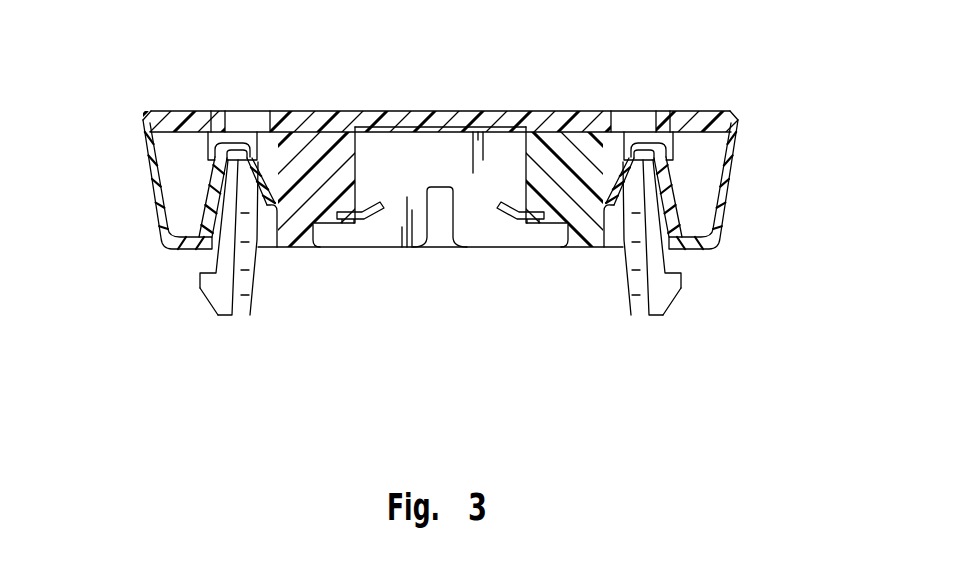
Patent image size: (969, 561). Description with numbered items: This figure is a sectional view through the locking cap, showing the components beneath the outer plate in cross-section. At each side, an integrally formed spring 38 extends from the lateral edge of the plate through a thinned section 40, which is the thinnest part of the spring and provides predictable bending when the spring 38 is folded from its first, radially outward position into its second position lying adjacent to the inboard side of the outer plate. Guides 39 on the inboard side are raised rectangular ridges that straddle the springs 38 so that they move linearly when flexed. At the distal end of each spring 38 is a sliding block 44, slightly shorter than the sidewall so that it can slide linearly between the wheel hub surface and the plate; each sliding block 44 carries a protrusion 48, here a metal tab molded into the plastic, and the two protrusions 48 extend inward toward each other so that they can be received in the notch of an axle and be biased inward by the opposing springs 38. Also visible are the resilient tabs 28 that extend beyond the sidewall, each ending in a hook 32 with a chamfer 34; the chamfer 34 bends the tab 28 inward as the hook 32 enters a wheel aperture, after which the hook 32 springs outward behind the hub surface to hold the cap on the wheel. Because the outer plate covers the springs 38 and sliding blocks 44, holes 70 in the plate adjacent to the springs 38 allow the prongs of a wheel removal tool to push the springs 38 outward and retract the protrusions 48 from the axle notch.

The tab 28 is at (633, 284).
The hook 32 is at (681, 278).
The chamfer 34 is at (673, 303).
The spring 38 is at (742, 181).
The guide 39 is at (670, 111).
The thinned section 40 is at (736, 118).
The sliding block 44 is at (581, 248).
The protrusion 48 is at (507, 217).
The hole 70 is at (633, 118).